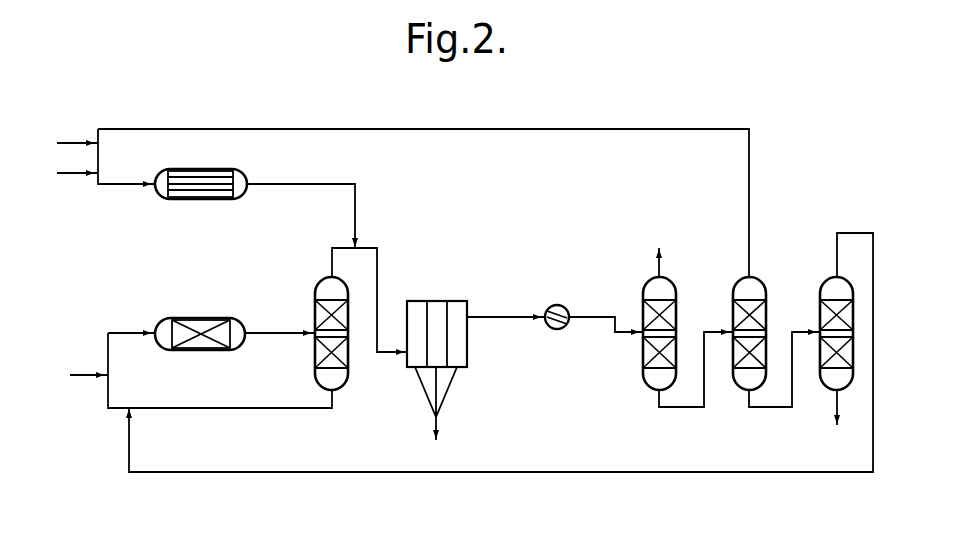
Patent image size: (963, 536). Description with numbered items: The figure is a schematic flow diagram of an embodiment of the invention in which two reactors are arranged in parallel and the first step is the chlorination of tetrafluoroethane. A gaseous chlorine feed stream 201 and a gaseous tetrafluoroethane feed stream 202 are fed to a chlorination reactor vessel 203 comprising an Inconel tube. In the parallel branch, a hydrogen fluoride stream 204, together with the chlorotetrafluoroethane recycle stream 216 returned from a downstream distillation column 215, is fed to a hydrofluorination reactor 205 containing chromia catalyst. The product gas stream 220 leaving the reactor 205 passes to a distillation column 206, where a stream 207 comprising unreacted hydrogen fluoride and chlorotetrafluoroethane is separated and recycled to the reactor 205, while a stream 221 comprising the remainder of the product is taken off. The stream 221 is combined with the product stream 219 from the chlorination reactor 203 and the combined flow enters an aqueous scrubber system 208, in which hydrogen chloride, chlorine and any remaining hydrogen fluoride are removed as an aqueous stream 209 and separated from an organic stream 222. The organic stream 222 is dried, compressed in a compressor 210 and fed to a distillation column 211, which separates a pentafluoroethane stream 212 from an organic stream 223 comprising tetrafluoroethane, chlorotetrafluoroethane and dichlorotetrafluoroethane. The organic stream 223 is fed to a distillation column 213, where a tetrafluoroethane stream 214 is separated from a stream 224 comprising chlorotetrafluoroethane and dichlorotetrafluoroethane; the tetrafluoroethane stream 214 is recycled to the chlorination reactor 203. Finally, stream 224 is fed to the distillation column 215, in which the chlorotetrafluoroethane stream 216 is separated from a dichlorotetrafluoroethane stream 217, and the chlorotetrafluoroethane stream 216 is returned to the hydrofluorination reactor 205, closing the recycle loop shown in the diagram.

The gaseous chlorine feed stream 201 is at (74, 142).
The gaseous 1,1,1,2-tetrafluoroethane feed stream 202 is at (66, 175).
The chlorination reactor vessel 203 is at (190, 200).
The hydrogen fluoride stream 204 is at (78, 376).
The hydrofluorination reactor 205 is at (201, 352).
The distillation column 206 is at (314, 362).
The recycle stream of unreacted hydrogen fluoride and HCFC 124 207 is at (238, 409).
The aqueous scrubber system 208 is at (458, 342).
The aqueous stream 209 is at (447, 391).
The compressor 210 is at (554, 304).
The distillation column 211 is at (643, 365).
The pentafluoroethane stream 212 is at (659, 272).
The distillation column 213 is at (740, 278).
The HFA 134a stream 214 is at (748, 208).
The distillation column 215 is at (827, 273).
The HCFC 124 recycle stream 216 is at (850, 232).
The CFC 114a stream 217 is at (831, 400).
The product stream from the chlorination reactor 219 is at (291, 186).
The product gas stream 220 is at (287, 332).
The remainder product stream 221 is at (331, 262).
The organic stream 222 is at (511, 313).
The organic stream 223 is at (673, 410).
The stream comprising HCFC 124 and CFC 114a 224 is at (769, 409).